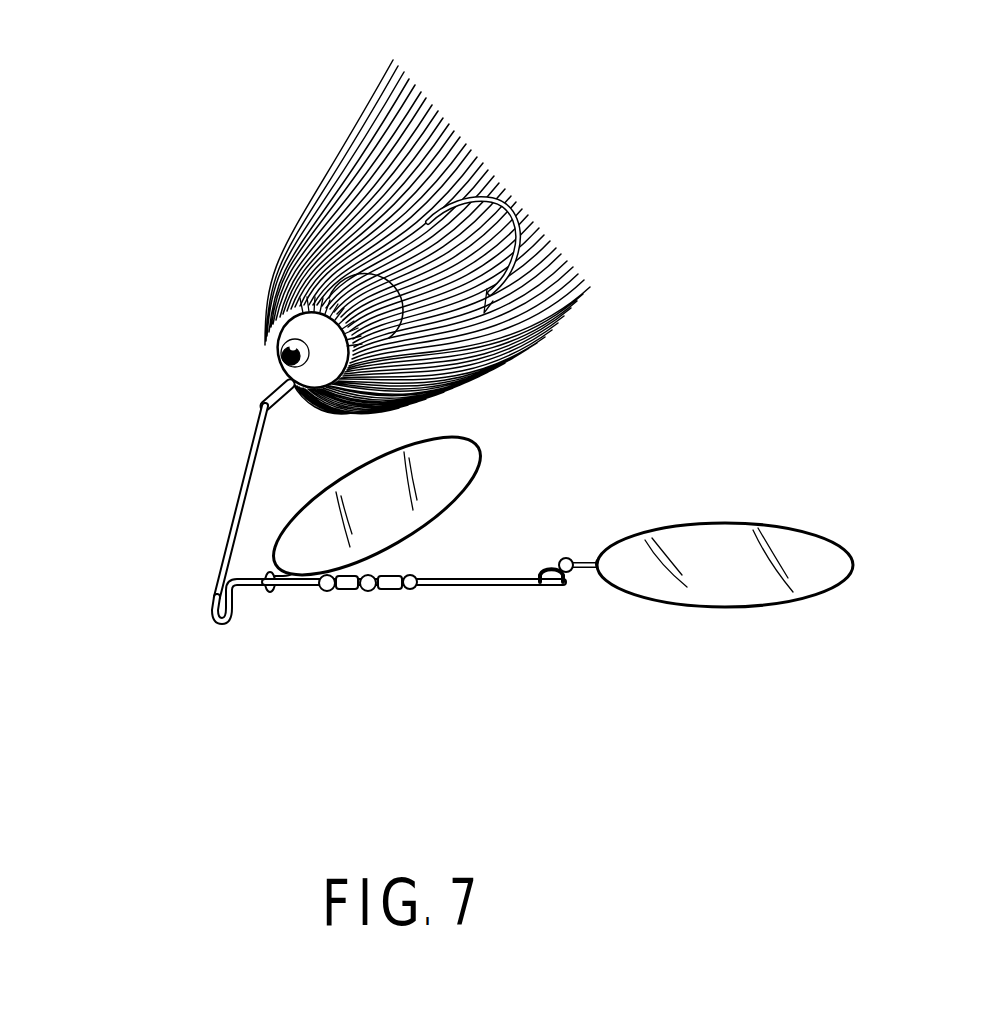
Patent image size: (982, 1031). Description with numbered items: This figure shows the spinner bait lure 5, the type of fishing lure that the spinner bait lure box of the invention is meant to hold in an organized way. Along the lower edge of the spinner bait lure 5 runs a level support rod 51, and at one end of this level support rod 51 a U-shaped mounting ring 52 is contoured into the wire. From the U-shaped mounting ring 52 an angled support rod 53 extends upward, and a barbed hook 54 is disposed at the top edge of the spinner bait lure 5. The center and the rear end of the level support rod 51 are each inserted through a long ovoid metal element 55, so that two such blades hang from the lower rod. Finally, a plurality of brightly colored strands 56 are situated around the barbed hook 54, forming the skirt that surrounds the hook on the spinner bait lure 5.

The spinner bait lure 5 is at (166, 342).
The level support rod 51 is at (473, 584).
The U-shaped mounting ring 52 is at (210, 617).
The angled support rod 53 is at (238, 481).
The barbed hook 54 is at (515, 242).
The long ovoid metal element 55 is at (452, 480).
The brightly colored strands 56 is at (347, 140).